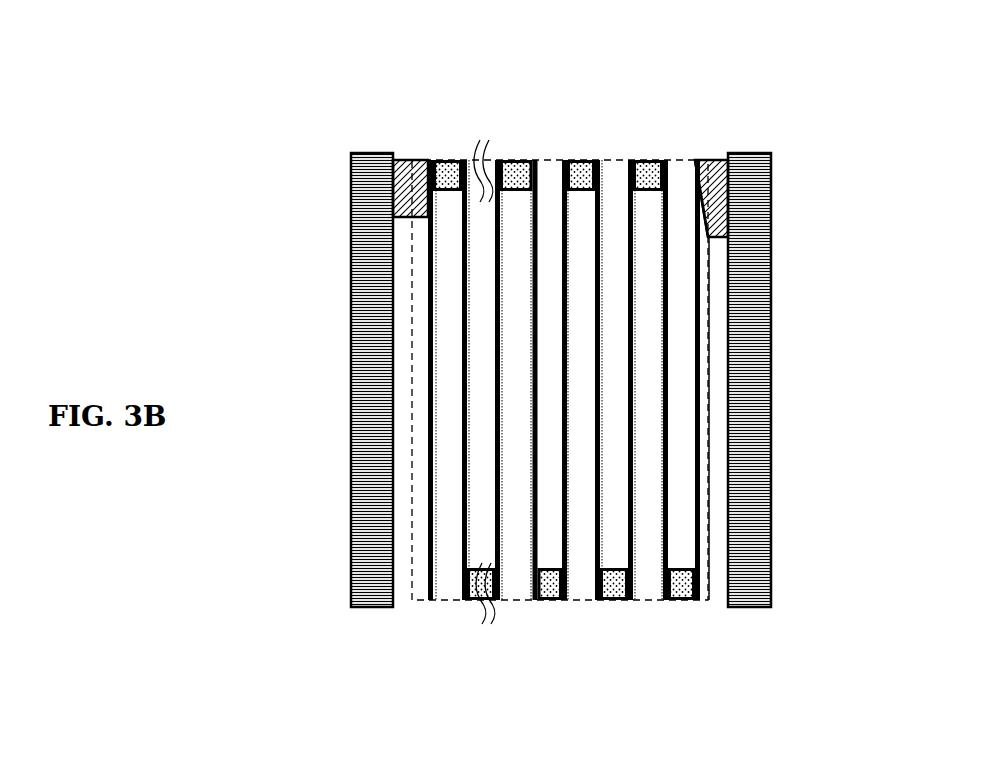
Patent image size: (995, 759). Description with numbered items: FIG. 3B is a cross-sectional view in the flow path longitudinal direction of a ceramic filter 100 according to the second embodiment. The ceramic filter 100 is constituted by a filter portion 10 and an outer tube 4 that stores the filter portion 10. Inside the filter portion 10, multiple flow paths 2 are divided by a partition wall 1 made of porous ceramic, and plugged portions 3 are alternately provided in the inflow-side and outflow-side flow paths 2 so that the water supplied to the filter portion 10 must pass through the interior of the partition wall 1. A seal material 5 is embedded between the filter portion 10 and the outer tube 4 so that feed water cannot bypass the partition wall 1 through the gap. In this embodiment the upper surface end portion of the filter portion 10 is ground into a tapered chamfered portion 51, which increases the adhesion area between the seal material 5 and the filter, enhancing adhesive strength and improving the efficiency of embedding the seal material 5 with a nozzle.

The partition wall 1 is at (500, 200).
The flow path 2 is at (447, 370).
The plugged portion 3 is at (584, 160).
The outer tube 4 is at (755, 243).
The seal material 5 is at (720, 158).
The chamfered portion 51 is at (692, 160).
The filter portion 10 is at (447, 603).
The ceramic filter 100 is at (836, 384).